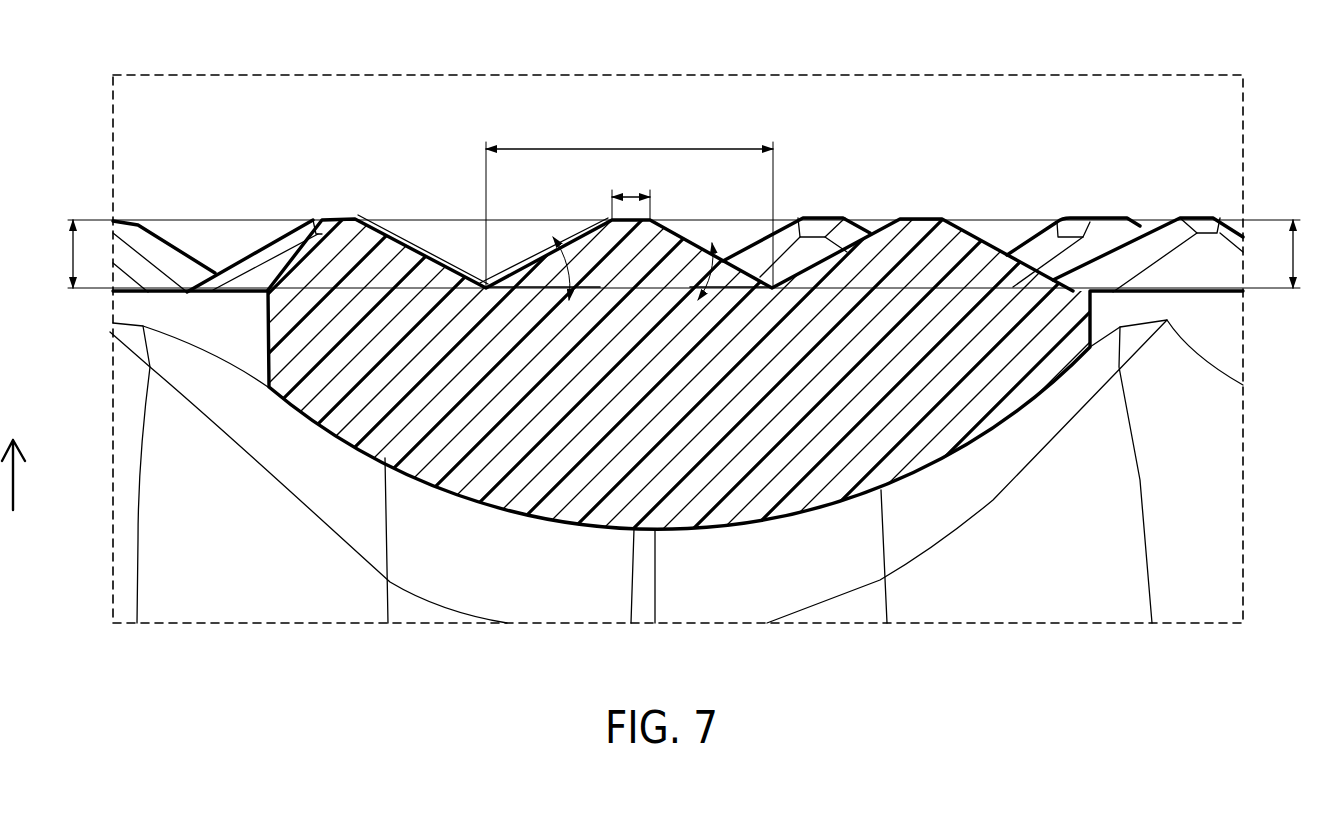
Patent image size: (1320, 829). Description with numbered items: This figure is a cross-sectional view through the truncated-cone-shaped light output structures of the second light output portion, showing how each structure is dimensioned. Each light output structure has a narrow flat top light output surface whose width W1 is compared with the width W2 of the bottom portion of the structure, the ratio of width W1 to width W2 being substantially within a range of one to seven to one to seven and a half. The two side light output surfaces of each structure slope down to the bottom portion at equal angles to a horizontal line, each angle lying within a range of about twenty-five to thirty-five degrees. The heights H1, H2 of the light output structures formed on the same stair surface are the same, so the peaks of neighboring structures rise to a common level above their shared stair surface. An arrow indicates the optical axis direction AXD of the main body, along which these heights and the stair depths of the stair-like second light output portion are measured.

The width of the top light output surface W1 is at (631, 194).
The width of the bottom portion W2 is at (629, 205).
The height of the light output structure H1 is at (68, 254).
The height of the light output structure H2 is at (1290, 254).
The optical axis direction AXD is at (49, 475).